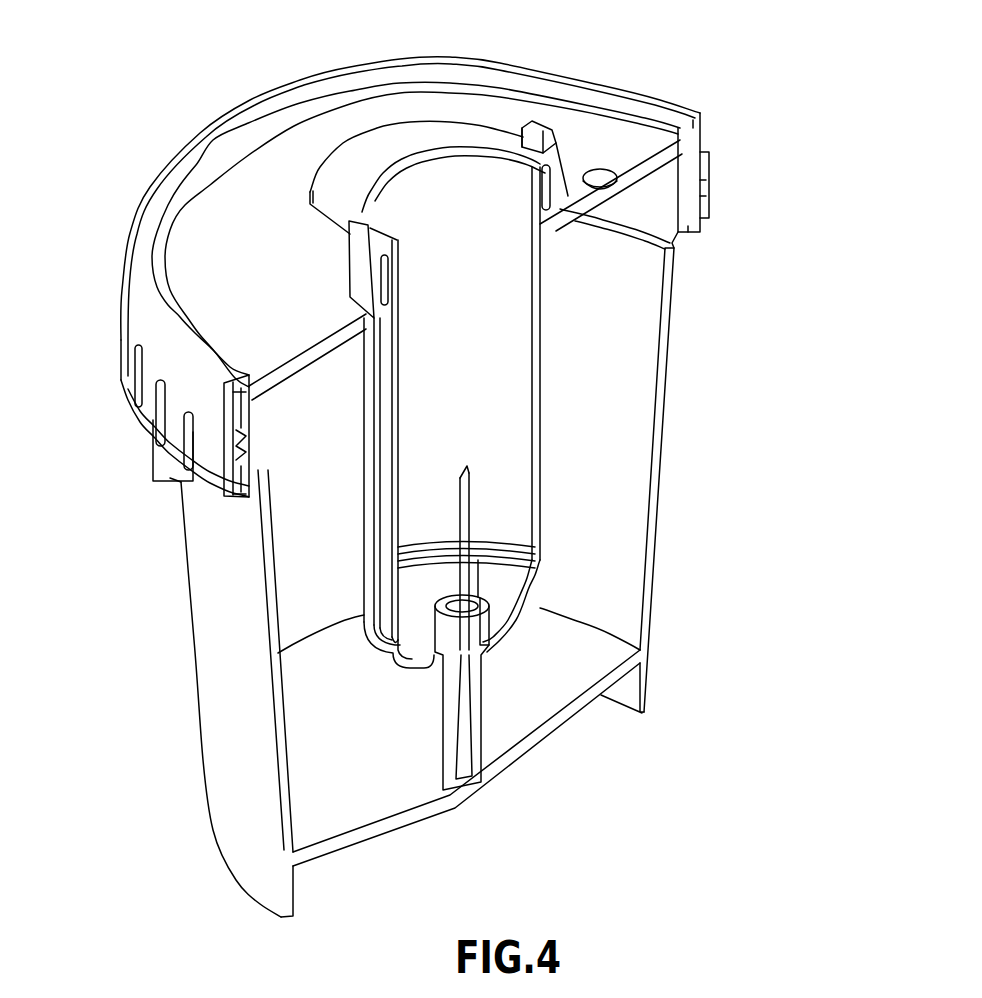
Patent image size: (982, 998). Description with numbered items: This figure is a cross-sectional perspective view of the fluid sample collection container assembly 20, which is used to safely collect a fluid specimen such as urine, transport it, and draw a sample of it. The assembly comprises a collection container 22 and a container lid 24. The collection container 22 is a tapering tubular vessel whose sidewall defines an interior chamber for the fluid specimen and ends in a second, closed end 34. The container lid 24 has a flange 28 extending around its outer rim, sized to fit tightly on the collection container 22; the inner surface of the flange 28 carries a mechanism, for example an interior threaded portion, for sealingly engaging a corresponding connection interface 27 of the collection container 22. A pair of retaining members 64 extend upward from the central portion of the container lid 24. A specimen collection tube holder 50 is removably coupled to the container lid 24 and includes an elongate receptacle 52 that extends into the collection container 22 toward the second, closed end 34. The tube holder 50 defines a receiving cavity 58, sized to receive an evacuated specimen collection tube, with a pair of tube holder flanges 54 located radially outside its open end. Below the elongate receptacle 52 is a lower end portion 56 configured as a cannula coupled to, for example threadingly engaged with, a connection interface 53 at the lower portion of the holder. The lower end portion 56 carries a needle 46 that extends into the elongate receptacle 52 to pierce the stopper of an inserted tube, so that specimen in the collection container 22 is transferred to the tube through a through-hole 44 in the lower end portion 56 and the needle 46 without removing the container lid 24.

The fluid sample collection container assembly 20 is at (744, 49).
The collection container 22 is at (669, 447).
The container lid 24 is at (133, 183).
The connection interface 27 is at (251, 430).
The flange 28 is at (176, 392).
The second, closed end 34 is at (366, 805).
The through-hole 44 is at (470, 750).
The needle 46 is at (470, 520).
The specimen collection tube holder 50 is at (544, 359).
The elongate receptacle 52 is at (376, 500).
The connection interface 53 is at (420, 648).
The tube holder flanges 54 is at (352, 158).
The lower end portion 56 is at (480, 678).
The receiving cavity 58 is at (465, 190).
The retaining members 64 is at (545, 125).